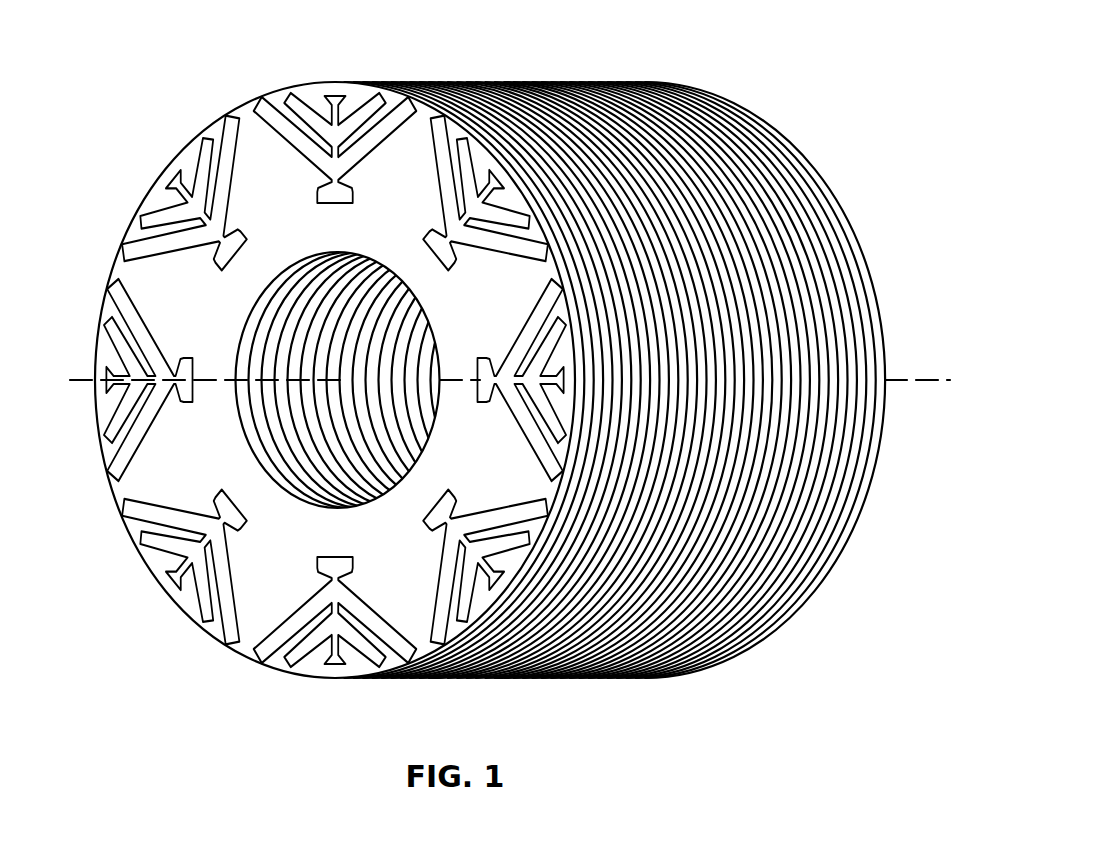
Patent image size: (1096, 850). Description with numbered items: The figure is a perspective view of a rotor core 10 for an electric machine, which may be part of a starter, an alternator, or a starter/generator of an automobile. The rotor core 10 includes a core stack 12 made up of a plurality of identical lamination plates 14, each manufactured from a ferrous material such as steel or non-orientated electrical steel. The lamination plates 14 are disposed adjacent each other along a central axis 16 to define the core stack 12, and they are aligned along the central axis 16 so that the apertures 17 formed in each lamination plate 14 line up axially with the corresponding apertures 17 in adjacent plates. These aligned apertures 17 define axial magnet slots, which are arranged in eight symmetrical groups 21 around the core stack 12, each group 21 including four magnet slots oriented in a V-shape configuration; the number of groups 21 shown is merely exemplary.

The rotor core 10 is at (489, 372).
The core stack 12 is at (614, 339).
The lamination plates 14 is at (543, 88).
The central axis 16 is at (903, 375).
The apertures 17 is at (336, 88).
The groups of magnet slots 21 is at (363, 165).